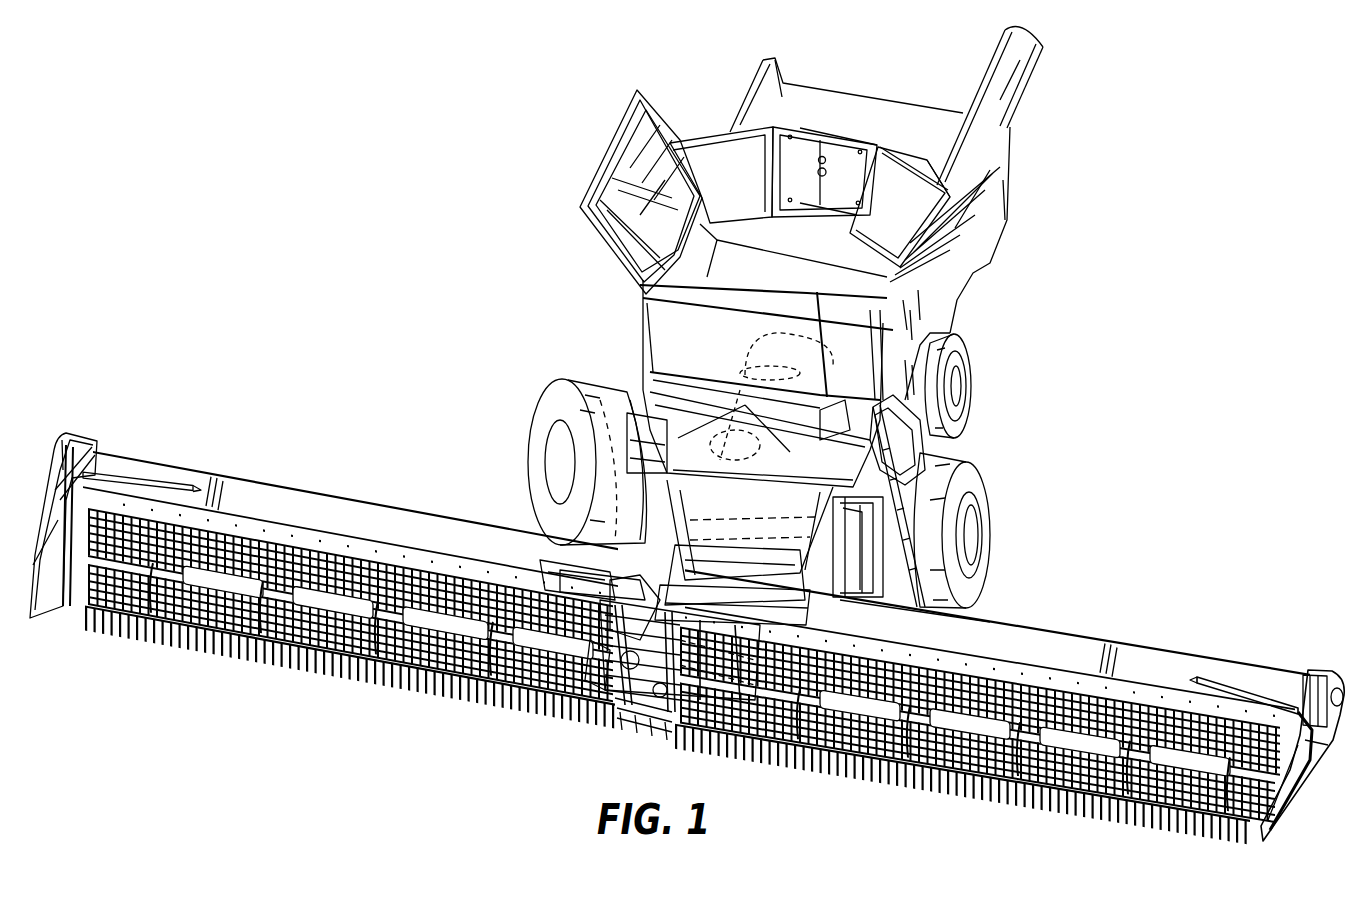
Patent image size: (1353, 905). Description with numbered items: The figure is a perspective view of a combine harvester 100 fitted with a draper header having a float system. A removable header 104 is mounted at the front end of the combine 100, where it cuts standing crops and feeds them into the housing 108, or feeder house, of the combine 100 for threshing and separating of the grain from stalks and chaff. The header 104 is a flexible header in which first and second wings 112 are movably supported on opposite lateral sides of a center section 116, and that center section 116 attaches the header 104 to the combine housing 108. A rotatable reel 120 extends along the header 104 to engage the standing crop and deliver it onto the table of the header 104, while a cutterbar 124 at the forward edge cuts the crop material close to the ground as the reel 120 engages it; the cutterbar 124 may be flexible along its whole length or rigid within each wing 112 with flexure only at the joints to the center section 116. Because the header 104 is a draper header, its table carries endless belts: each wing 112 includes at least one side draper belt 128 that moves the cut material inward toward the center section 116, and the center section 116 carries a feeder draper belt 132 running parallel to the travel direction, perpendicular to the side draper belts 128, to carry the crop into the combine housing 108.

The combine harvester 100 is at (424, 202).
The header 104 is at (359, 476).
The housing 108 is at (900, 380).
The wings 112 is at (236, 495).
The center section 116 is at (556, 556).
The reel 120 is at (197, 628).
The cutterbar 124 is at (75, 604).
The side draper belt 128 is at (417, 672).
The feeder draper belt 132 is at (650, 707).